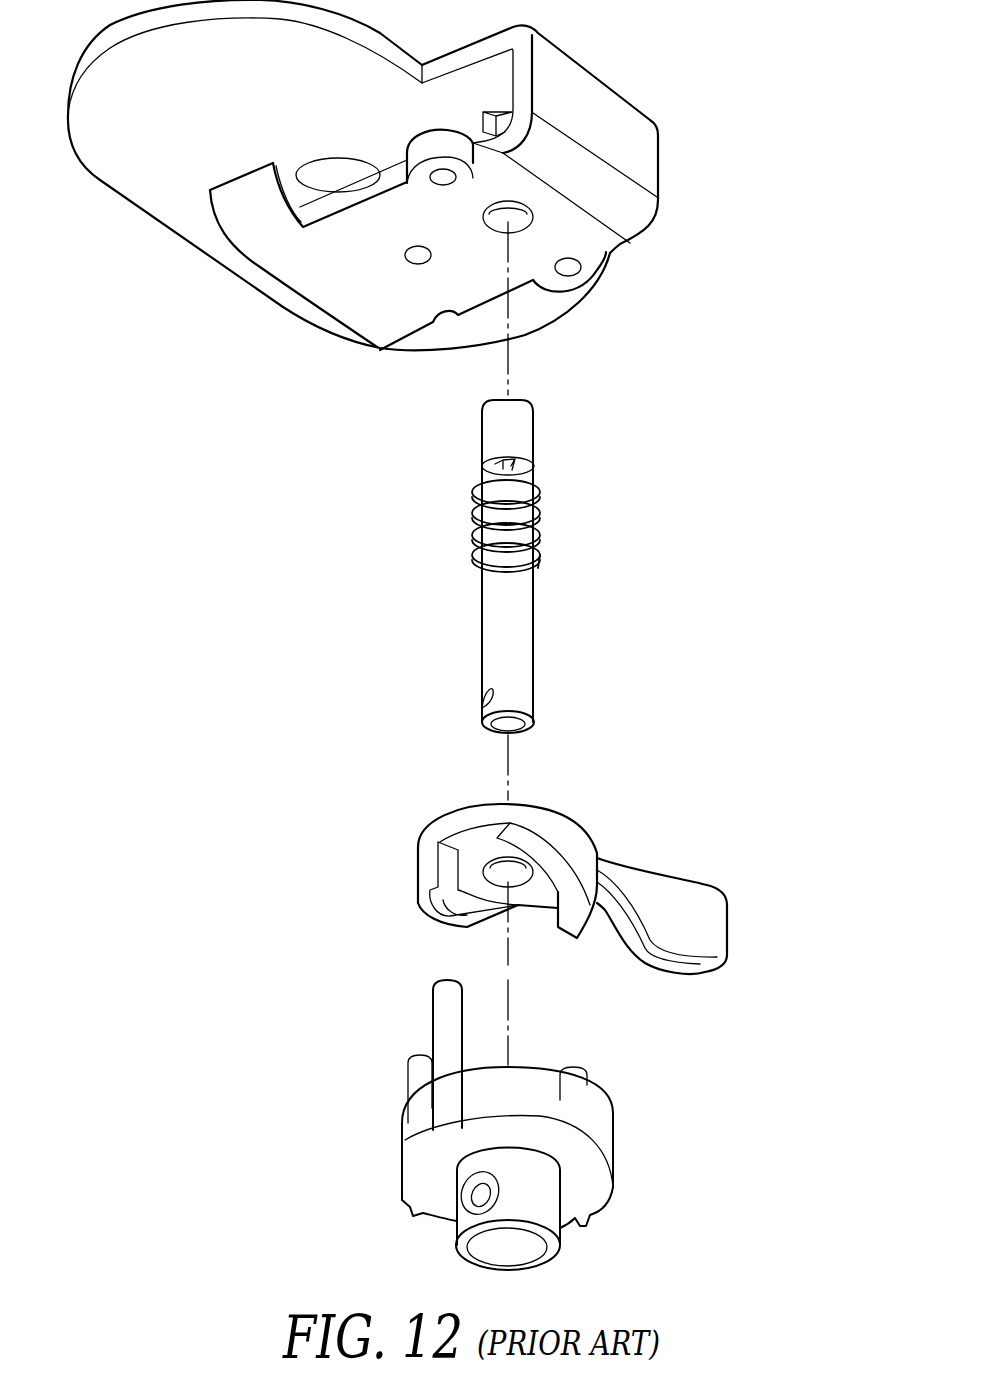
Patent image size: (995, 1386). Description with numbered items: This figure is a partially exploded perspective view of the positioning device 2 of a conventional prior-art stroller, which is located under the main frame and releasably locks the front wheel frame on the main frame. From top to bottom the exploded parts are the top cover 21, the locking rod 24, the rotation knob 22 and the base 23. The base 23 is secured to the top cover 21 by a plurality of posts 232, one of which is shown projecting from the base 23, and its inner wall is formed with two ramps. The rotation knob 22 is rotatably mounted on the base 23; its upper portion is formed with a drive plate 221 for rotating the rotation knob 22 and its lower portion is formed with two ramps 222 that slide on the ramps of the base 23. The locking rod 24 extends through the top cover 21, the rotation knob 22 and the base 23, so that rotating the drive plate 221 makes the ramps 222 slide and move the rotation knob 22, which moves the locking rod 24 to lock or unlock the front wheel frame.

The positioning device 2 is at (613, 569).
The top cover 21 is at (613, 120).
The rotation knob 22 is at (560, 875).
The drive plate 221 is at (687, 914).
The ramps 222 is at (437, 903).
The base 23 is at (505, 1125).
The posts 232 is at (447, 1020).
The locking rod 24 is at (517, 632).